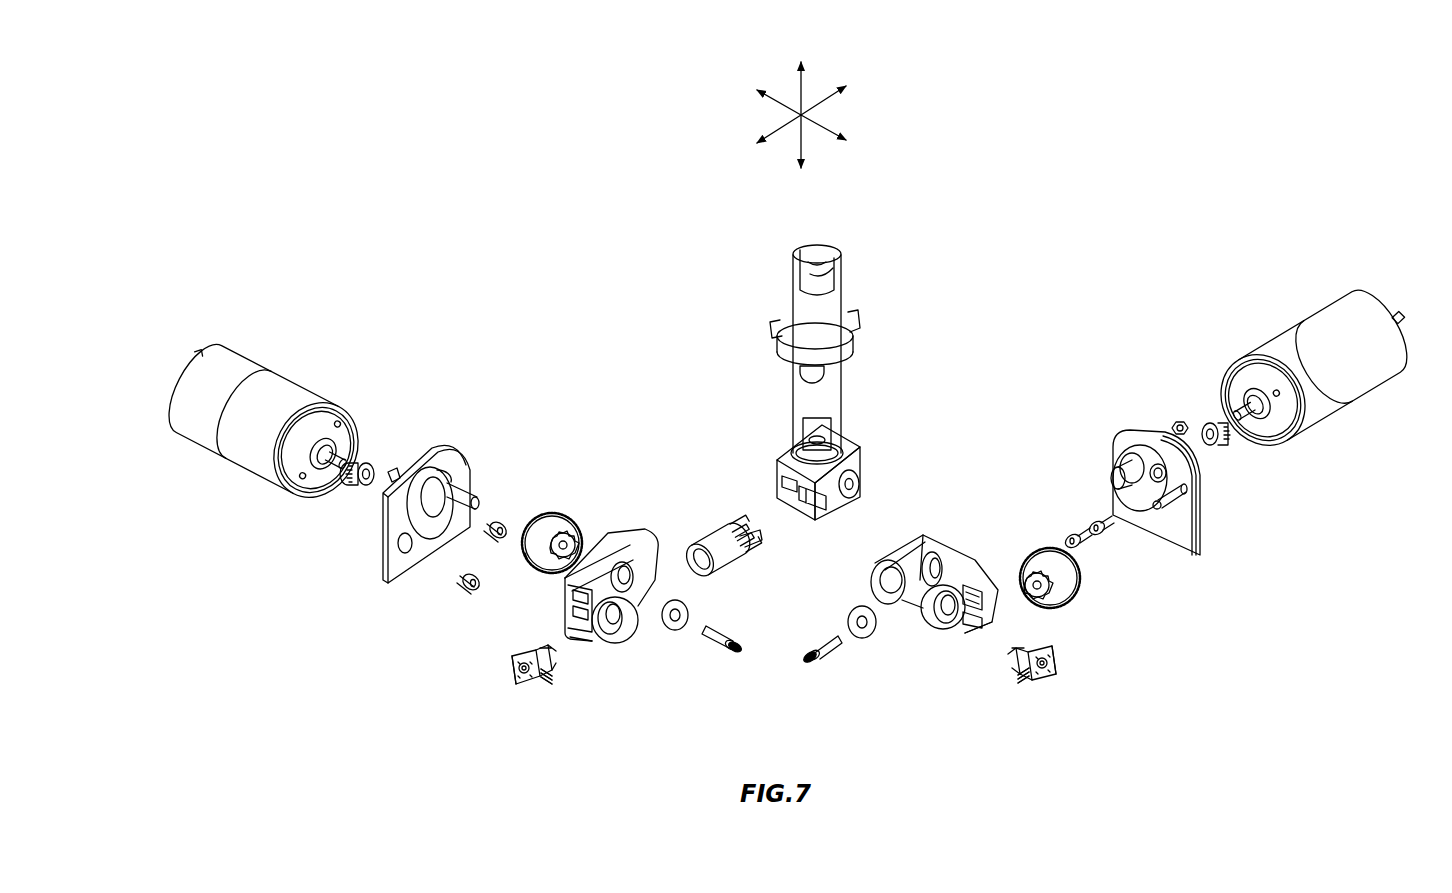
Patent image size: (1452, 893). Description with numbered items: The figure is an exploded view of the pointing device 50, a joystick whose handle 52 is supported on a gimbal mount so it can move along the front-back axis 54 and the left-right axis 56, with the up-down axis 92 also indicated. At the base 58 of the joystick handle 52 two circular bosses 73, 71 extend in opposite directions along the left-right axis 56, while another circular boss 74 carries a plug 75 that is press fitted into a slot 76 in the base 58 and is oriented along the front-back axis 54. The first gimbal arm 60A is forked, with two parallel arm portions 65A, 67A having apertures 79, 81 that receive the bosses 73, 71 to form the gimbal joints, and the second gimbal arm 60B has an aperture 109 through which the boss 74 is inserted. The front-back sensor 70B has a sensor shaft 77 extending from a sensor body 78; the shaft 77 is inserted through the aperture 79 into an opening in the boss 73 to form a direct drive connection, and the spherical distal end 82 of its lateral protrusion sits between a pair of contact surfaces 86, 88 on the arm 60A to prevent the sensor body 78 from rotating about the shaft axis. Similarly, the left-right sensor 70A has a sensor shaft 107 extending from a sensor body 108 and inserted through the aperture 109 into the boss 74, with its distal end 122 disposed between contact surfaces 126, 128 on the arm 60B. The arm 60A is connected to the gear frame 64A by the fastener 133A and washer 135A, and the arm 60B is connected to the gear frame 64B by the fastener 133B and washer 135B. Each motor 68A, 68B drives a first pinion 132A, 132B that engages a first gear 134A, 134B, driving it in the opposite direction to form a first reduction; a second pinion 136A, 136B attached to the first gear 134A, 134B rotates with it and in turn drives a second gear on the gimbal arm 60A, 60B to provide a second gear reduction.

The pointing device 50 is at (1024, 192).
The joystick handle 52 is at (836, 278).
The front-back axis 54 is at (833, 97).
The left-right axis 56 is at (834, 138).
The base 58 is at (862, 458).
The first gimbal arm 60A is at (955, 547).
The second gimbal arm 60B is at (652, 535).
The gear frame 64A is at (1192, 560).
The gear frame 64B is at (448, 452).
The arm portion 65A is at (958, 640).
The arm portion 67A is at (912, 543).
The left-right motor 68A is at (1365, 390).
The front-back motor 68B is at (210, 450).
The left-right sensor 70A is at (514, 685).
The front-back sensor 70B is at (1056, 676).
The boss 71 is at (790, 452).
The boss 73 is at (860, 484).
The boss 74 is at (732, 565).
The plug 75 is at (730, 528).
The slot 76 is at (780, 484).
The sensor shaft 77 is at (1018, 665).
The sensor body 78 is at (1024, 684).
The aperture 79 is at (940, 628).
The aperture 81 is at (882, 576).
The distal end 82 is at (1055, 650).
The contact surface 86 is at (985, 608).
The contact surface 88 is at (968, 632).
The up-down axis 92 is at (803, 78).
The sensor shaft 107 is at (566, 668).
The sensor body 108 is at (540, 684).
The aperture 109 is at (610, 636).
The distal end 122 is at (512, 660).
The contact surface 126 is at (572, 594).
The contact surface 128 is at (572, 614).
The first pinion 132A is at (1214, 446).
The first pinion 132B is at (355, 488).
The fastener 133A is at (826, 662).
The fastener 133B is at (718, 645).
The first gear 134A is at (1078, 600).
The first gear 134B is at (552, 513).
The washer 135A is at (848, 620).
The washer 135B is at (690, 608).
The second pinion 136A is at (1040, 580).
The second pinion 136B is at (575, 540).